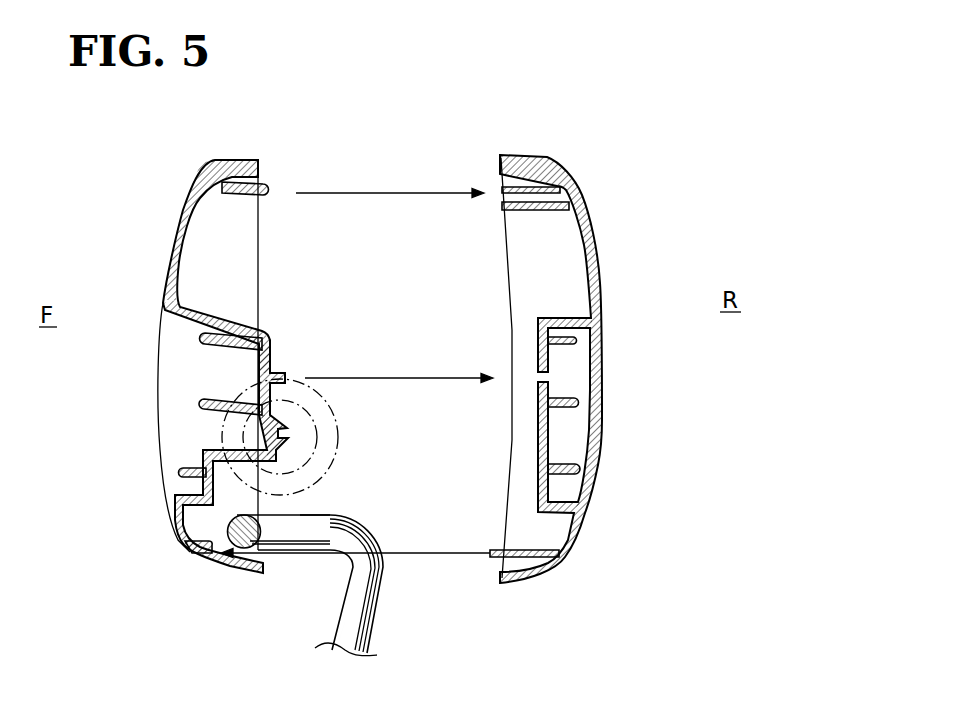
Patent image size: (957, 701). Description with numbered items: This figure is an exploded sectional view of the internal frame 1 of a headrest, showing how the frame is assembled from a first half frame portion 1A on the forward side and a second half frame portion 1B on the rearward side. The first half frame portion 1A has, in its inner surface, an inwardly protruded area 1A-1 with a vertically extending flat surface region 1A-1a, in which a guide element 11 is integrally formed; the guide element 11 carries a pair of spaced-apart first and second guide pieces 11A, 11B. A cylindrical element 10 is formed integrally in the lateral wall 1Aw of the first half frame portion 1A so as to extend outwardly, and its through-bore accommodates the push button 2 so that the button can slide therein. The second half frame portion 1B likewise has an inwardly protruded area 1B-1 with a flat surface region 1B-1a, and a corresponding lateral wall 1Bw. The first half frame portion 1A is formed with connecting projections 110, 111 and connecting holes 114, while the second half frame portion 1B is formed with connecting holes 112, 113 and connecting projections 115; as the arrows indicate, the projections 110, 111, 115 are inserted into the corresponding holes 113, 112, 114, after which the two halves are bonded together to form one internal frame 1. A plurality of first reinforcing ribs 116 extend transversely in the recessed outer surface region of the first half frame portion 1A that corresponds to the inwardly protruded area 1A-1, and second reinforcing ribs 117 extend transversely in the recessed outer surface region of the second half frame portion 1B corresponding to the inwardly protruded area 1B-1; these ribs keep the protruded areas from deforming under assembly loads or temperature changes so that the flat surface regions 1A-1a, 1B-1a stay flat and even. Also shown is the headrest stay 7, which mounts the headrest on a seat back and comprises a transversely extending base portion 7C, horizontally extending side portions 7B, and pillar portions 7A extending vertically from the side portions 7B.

The internal frame 1 is at (438, 112).
The first half frame portion 1A is at (256, 157).
The second half frame portion 1B is at (497, 153).
The lateral wall 1Aw is at (217, 240).
The inwardly protruded area 1A-1 is at (221, 320).
The flat surface region 1A-1a is at (288, 372).
The connecting projections 111 is at (270, 196).
The connecting holes 112 is at (502, 203).
The connecting projections 110 is at (273, 362).
The first guide piece 11A is at (280, 413).
The cylindrical element 10 is at (331, 395).
The push button 2 is at (322, 428).
The guide element 11 is at (300, 440).
The second guide piece 11B is at (290, 446).
The side portion 7B is at (308, 515).
The first reinforcing ribs 116 is at (207, 337).
The connecting holes 114 is at (217, 562).
The base portion 7C is at (260, 550).
The pillar portion 7A is at (340, 619).
The headrest stay 7 is at (390, 616).
The lateral wall 1Bw is at (560, 237).
The inwardly protruded area 1B-1 is at (545, 316).
The flat surface region 1B-1a is at (548, 342).
The connecting holes 113 is at (540, 378).
The connecting projections 115 is at (512, 550).
The second reinforcing ribs 117 is at (577, 341).